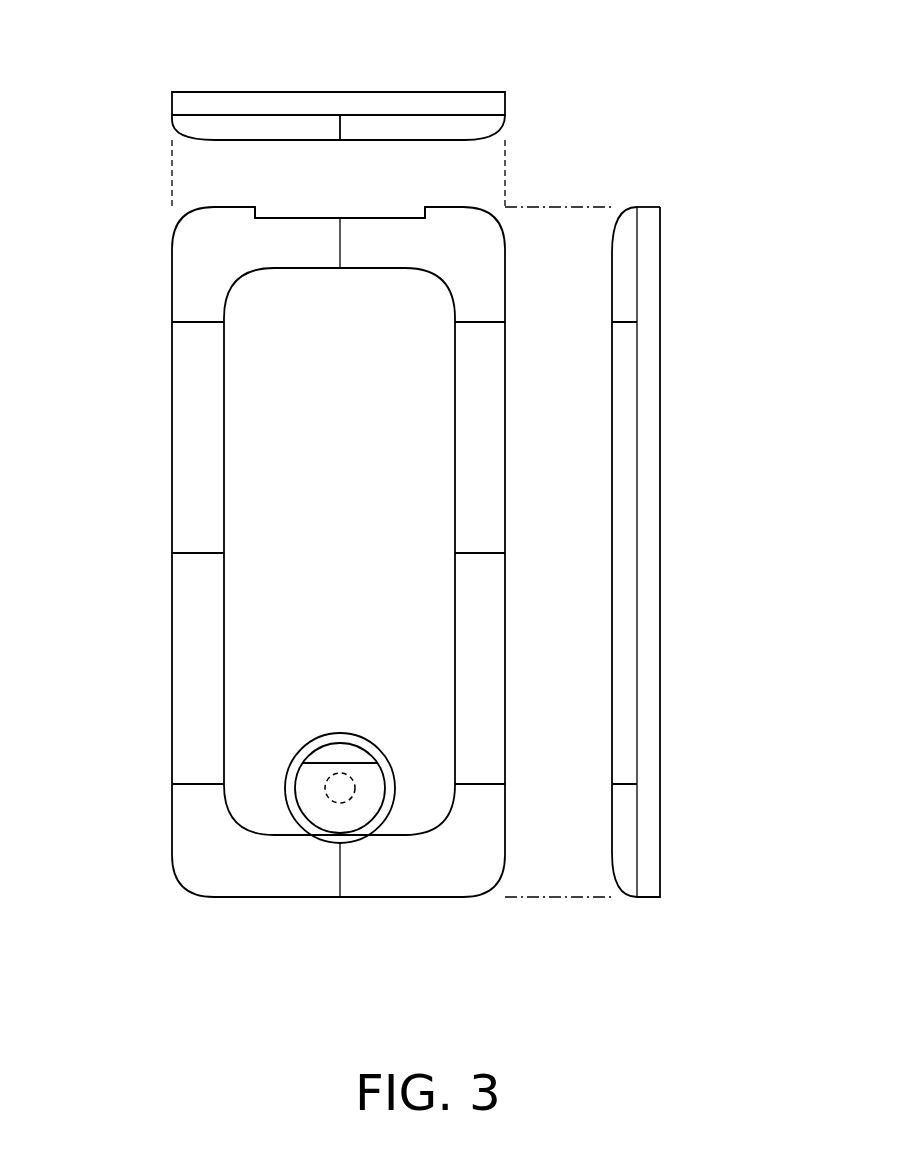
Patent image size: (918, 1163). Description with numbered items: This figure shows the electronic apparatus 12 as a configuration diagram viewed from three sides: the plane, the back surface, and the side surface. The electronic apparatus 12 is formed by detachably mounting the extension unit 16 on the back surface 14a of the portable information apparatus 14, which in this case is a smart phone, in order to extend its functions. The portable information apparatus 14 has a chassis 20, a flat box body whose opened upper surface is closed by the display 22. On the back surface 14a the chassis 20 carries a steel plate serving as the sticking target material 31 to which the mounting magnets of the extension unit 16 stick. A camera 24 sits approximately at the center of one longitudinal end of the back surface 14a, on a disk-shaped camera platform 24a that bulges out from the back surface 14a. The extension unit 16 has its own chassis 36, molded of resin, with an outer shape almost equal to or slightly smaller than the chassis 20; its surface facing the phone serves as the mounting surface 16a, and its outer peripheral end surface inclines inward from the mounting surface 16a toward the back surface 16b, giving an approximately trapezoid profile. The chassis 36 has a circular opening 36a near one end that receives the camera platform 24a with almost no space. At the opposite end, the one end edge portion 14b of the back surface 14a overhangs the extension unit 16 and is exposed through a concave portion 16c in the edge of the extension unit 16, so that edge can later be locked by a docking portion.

The electronic apparatus 12 is at (590, 45).
The portable information apparatus 14 is at (505, 100).
The back surface 14a is at (290, 117).
The one end edge portion 14b is at (297, 208).
The extension unit 16 is at (505, 130).
The mounting surface 16a is at (378, 112).
The back surface 16b is at (422, 140).
The concave portion 16c is at (263, 218).
The chassis 20 is at (193, 108).
The display 22 is at (660, 866).
The camera 24 is at (336, 802).
The camera platform 24a is at (350, 818).
The sticking target material 31 is at (558, 552).
The chassis 36 is at (232, 130).
The opening 36a is at (287, 783).